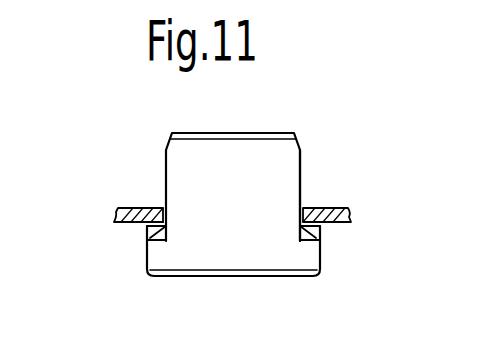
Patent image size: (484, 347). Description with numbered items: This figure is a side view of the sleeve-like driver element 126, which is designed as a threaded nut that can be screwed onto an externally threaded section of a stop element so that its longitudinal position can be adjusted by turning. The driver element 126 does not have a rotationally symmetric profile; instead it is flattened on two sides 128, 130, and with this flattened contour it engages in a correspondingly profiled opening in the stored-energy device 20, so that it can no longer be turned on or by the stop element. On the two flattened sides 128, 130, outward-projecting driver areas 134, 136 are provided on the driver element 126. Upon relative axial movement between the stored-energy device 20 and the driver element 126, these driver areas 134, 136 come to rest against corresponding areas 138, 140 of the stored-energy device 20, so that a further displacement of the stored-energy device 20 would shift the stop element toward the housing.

The stored-energy device 20 is at (121, 207).
The driver element 126 is at (198, 248).
The flattened side 128 is at (165, 172).
The flattened side 130 is at (303, 178).
The driver area 134 is at (146, 256).
The driver area 136 is at (322, 247).
The area of the stored-energy device 138 is at (327, 209).
The area of the stored-energy device 140 is at (137, 223).